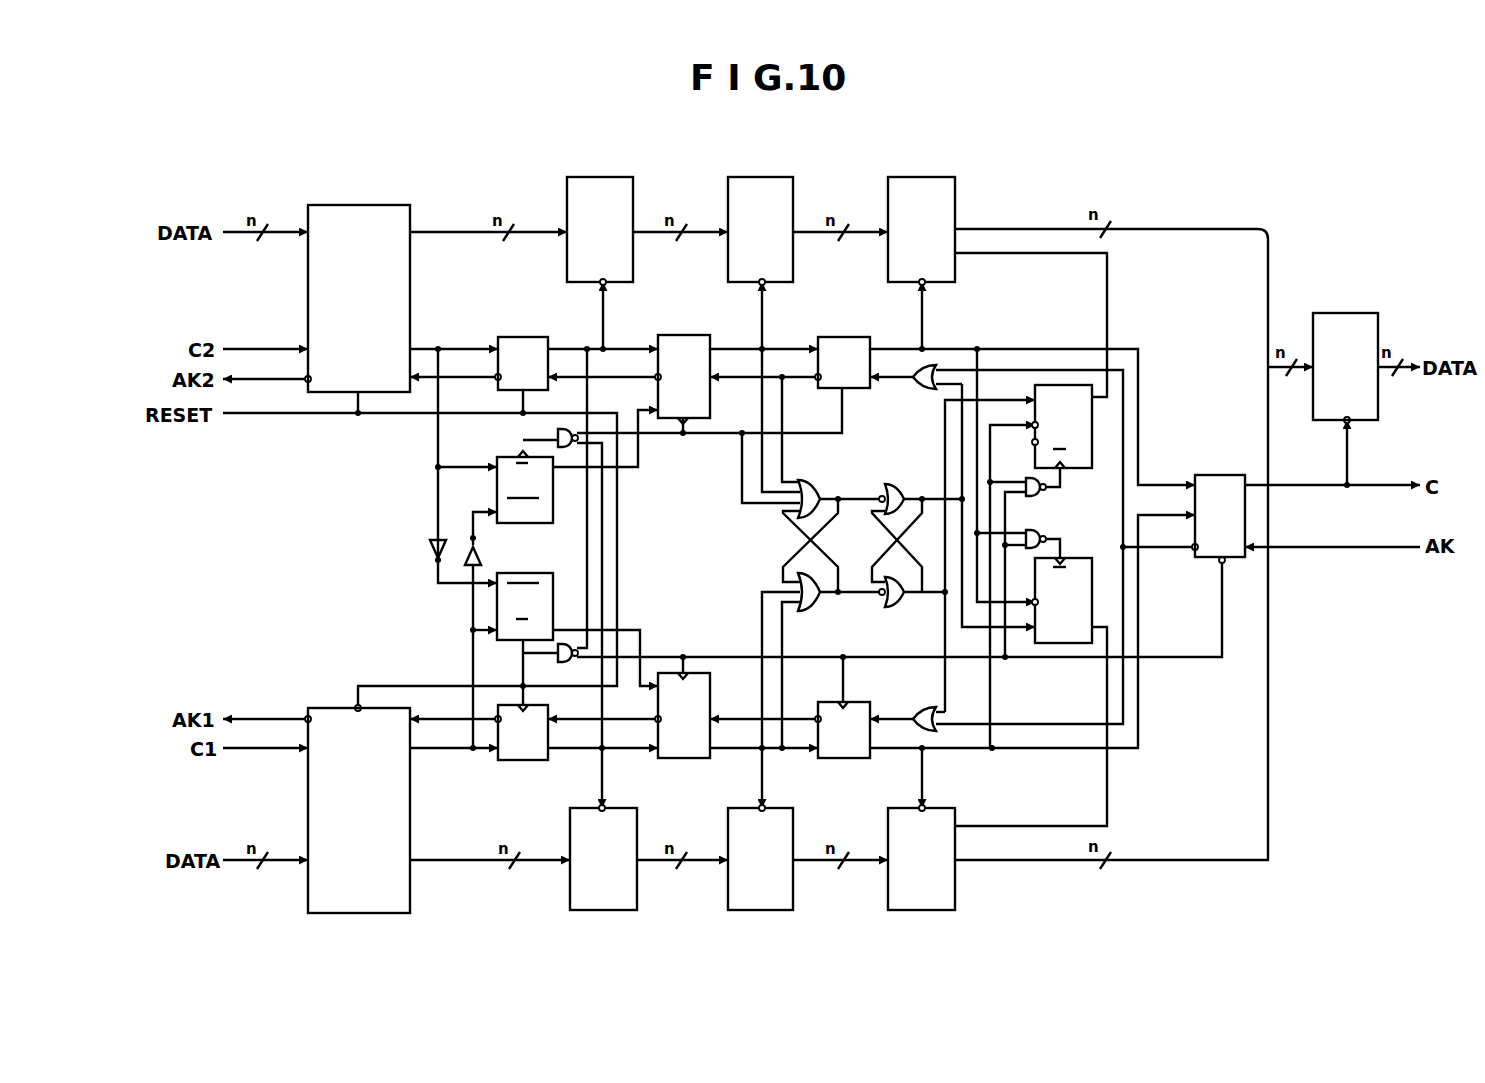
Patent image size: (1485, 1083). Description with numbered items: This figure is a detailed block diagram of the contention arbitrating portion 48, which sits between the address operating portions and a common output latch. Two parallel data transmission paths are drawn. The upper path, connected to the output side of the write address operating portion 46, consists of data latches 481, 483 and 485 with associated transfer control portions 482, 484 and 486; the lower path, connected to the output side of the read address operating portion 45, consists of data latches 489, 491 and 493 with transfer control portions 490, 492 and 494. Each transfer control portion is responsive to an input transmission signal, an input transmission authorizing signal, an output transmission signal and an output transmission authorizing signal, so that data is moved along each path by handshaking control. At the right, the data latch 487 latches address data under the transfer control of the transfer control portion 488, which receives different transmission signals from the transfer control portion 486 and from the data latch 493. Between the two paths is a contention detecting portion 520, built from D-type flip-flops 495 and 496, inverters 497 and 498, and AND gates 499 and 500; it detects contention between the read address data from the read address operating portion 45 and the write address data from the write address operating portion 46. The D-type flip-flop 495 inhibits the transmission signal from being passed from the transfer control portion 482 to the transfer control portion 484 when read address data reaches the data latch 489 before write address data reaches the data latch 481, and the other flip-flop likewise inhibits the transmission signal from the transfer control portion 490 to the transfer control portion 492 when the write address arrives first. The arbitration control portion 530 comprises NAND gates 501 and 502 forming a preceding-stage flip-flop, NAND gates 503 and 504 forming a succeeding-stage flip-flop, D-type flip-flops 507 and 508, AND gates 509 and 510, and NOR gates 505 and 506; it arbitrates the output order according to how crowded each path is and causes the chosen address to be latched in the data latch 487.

The read address operating portion 45 is at (338, 705).
The write address operating portion 46 is at (412, 215).
The contention arbitrating portion 48 is at (1068, 172).
The data latch 481 is at (606, 177).
The transfer control portion 482 is at (538, 337).
The data latch 483 is at (779, 177).
The transfer control portion 484 is at (700, 335).
The data latch 485 is at (934, 177).
The transfer control portion 486 is at (862, 337).
The data latch 487 is at (1360, 313).
The transfer control portion 488 is at (1213, 475).
The data latch 489 is at (636, 820).
The transfer control portion 490 is at (512, 760).
The data latch 491 is at (793, 820).
The transfer control portion 492 is at (700, 758).
The data latch 493 is at (955, 820).
The transfer control portion 494 is at (858, 758).
The D-type flip-flop 495 is at (552, 566).
The D-type flip-flop 496 is at (553, 520).
The inverter 497 is at (428, 546).
The inverter 498 is at (482, 555).
The AND gate 499 is at (560, 428).
The AND gate 500 is at (548, 664).
The NAND gate 501 is at (815, 483).
The NAND gate 502 is at (812, 612).
The NAND gate 503 is at (895, 484).
The NAND gate 504 is at (890, 610).
The NOR gate 505 is at (926, 388).
The NOR gate 506 is at (926, 706).
The D-type flip-flop 507 is at (1078, 468).
The D-type flip-flop 508 is at (1080, 548).
The AND gate 509 is at (1036, 497).
The AND gate 510 is at (1036, 533).
The contention detecting portion 520 is at (408, 525).
The arbitration control portion 530 is at (745, 547).